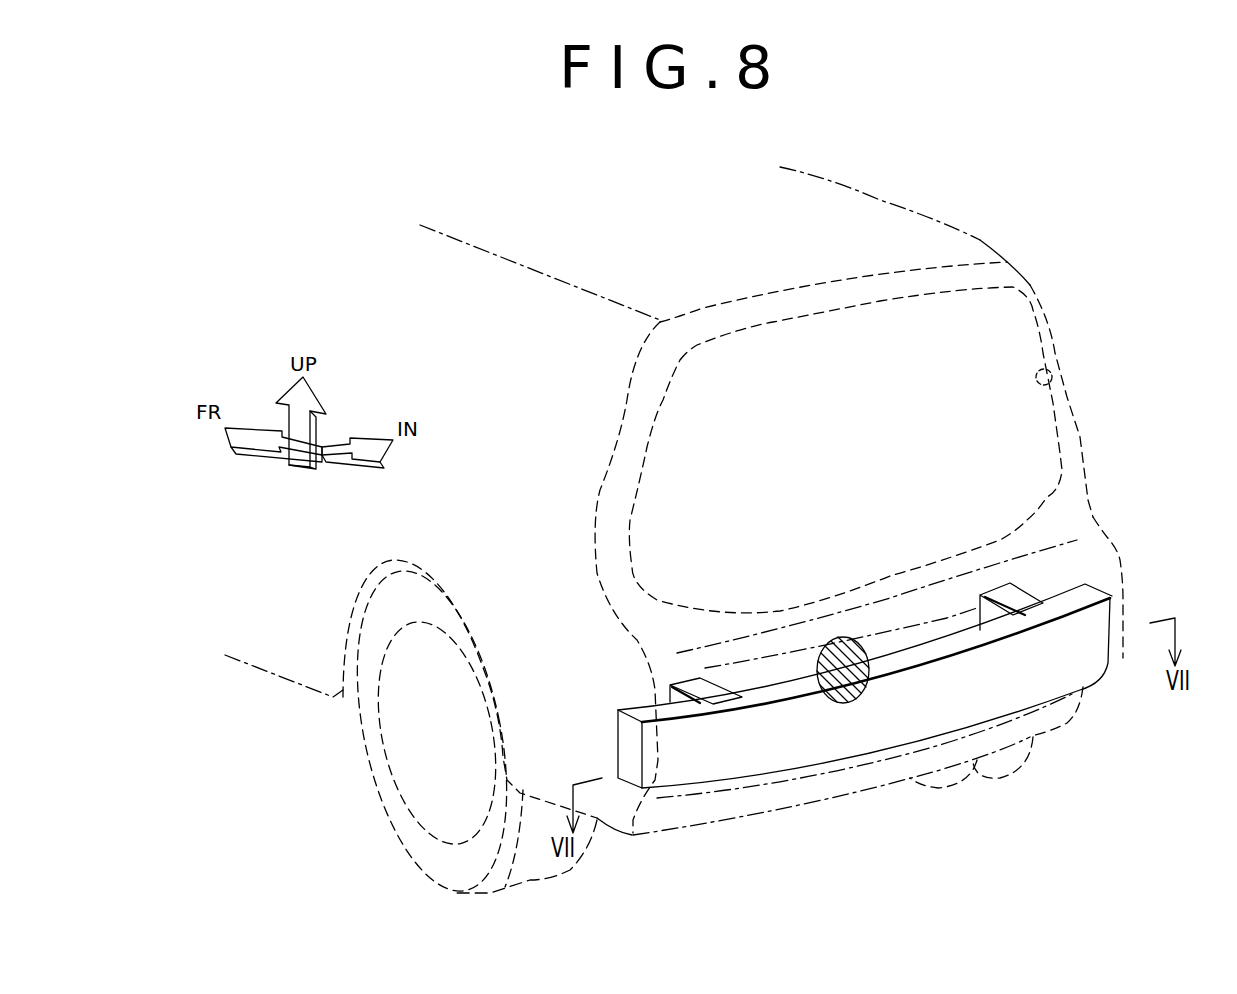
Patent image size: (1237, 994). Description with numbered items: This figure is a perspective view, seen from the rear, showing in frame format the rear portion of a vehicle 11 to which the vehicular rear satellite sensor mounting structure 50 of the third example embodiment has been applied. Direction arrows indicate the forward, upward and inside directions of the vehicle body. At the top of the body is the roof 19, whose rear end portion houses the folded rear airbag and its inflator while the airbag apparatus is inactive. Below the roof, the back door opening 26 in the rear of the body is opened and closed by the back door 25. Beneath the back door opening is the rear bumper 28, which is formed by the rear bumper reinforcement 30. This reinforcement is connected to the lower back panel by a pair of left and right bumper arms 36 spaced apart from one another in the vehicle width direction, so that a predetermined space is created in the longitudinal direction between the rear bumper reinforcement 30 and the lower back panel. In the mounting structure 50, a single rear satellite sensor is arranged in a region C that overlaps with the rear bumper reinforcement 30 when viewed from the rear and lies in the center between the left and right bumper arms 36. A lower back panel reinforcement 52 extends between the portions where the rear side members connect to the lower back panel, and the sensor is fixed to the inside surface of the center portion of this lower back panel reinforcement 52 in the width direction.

The vehicle 11 is at (996, 239).
The roof 19 is at (865, 212).
The back door 25 is at (1030, 445).
The back door opening 26 is at (1050, 380).
The rear bumper 28 is at (865, 734).
The rear bumper reinforcement 30 is at (807, 748).
The bumper arms 36 is at (1005, 601).
The vehicular rear satellite sensor mounting structure 50 is at (1087, 530).
The lower back panel reinforcement 52 is at (782, 665).
The region C is at (845, 648).